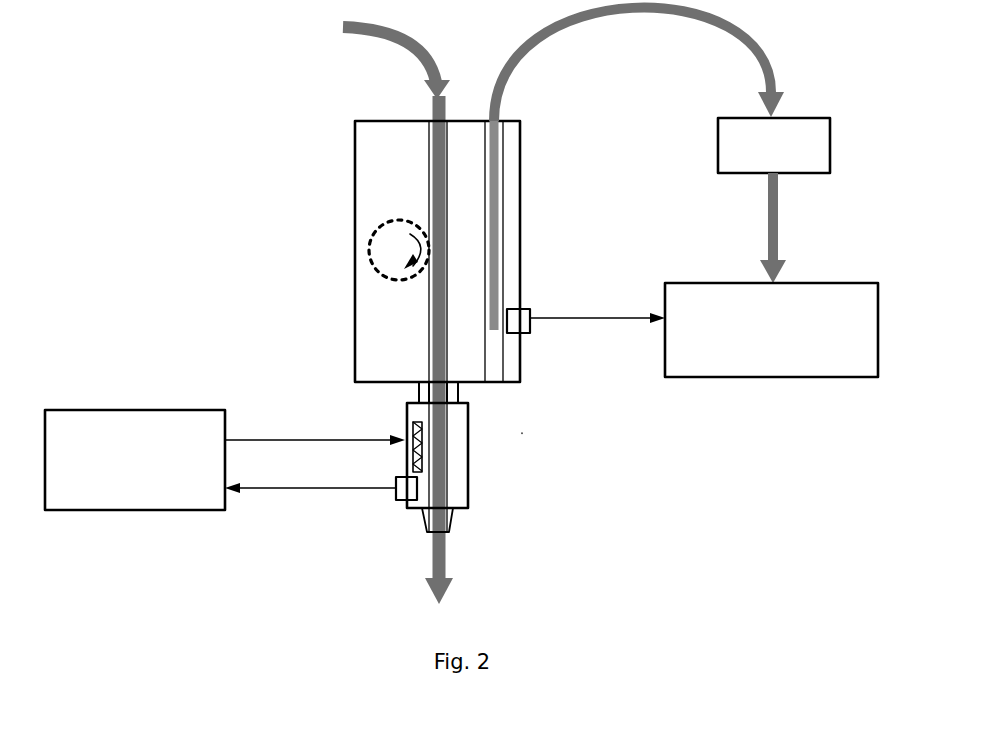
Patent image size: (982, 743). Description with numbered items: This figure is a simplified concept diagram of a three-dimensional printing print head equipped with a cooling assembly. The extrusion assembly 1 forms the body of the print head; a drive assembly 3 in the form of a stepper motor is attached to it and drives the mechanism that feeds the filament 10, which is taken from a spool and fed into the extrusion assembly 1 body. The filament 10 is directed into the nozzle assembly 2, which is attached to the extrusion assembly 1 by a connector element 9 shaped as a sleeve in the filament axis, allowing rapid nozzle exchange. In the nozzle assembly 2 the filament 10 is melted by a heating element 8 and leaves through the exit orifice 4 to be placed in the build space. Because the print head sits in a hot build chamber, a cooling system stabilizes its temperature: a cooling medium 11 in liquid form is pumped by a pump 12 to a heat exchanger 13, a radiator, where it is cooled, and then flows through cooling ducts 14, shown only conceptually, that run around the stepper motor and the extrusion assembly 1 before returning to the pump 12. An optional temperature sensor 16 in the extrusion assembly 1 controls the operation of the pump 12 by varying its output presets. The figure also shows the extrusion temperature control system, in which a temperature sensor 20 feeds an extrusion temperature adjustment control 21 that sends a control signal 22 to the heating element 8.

The extrusion assembly 1 is at (382, 178).
The nozzle assembly 2 is at (458, 475).
The drive assembly 3 is at (390, 249).
The exit orifice 4 is at (457, 522).
The heating element 8 is at (412, 425).
The connector element 9 is at (420, 393).
The filament 10 is at (377, 40).
The cooling medium 11 is at (522, 433).
The pump 12 is at (774, 200).
The heat exchanger 13 is at (771, 330).
The cooling ducts 14 is at (502, 148).
The temperature sensor 16 is at (522, 315).
The temperature sensor 20 is at (403, 492).
The extrusion temperature adjustment control 21 is at (135, 460).
The control signal 22 is at (282, 438).